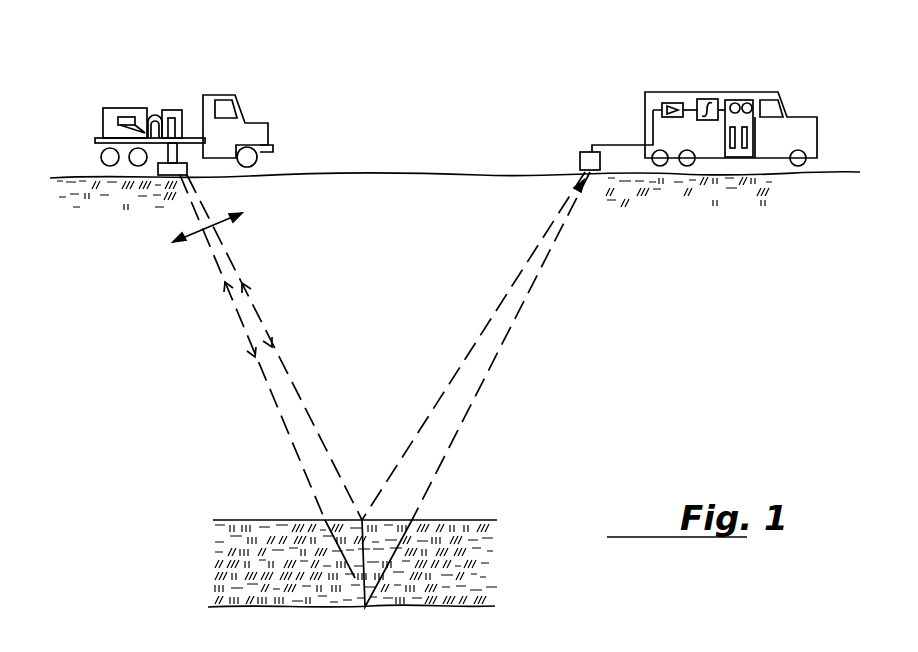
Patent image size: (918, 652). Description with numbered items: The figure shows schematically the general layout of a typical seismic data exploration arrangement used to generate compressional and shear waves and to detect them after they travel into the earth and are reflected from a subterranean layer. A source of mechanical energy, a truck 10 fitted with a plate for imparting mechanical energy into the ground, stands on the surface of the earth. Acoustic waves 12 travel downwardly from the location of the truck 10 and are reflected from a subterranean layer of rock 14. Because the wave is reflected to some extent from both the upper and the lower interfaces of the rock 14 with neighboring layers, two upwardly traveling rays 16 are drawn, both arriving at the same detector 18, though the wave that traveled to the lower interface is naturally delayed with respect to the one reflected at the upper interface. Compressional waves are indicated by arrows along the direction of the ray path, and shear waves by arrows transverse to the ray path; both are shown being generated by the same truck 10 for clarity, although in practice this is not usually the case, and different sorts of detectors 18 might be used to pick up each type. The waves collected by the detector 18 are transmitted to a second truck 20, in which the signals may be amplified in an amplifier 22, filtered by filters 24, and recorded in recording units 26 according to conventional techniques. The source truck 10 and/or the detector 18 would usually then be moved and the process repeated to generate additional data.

The truck 10 is at (213, 95).
The acoustic waves 12 is at (283, 360).
The subterranean layer of rock 14 is at (203, 572).
The upwardly traveling rays 16 is at (480, 326).
The detector 18 is at (580, 160).
The truck 20 is at (692, 92).
The amplifier 22 is at (673, 103).
The filters 24 is at (707, 99).
The recording units 26 is at (750, 100).